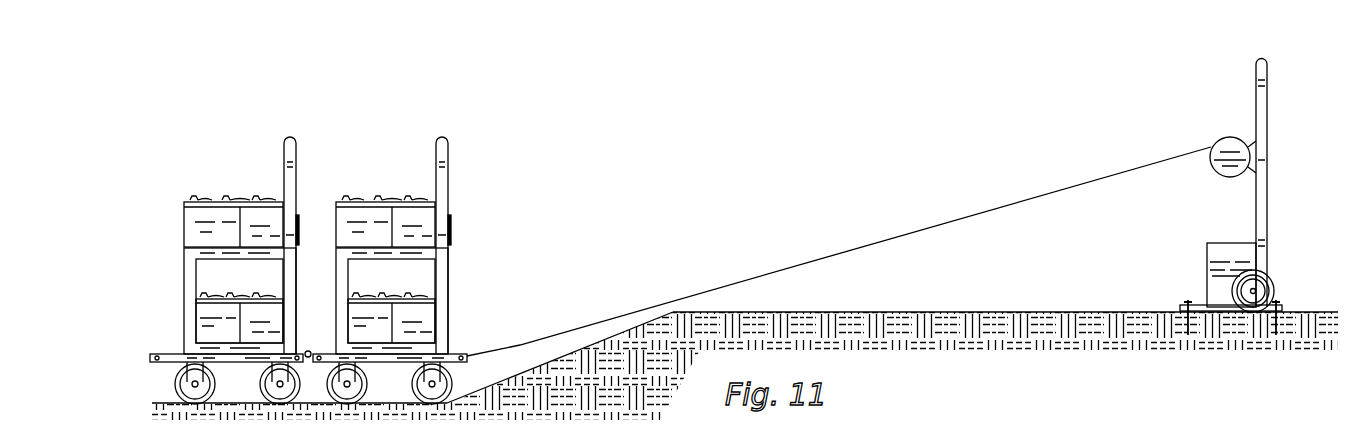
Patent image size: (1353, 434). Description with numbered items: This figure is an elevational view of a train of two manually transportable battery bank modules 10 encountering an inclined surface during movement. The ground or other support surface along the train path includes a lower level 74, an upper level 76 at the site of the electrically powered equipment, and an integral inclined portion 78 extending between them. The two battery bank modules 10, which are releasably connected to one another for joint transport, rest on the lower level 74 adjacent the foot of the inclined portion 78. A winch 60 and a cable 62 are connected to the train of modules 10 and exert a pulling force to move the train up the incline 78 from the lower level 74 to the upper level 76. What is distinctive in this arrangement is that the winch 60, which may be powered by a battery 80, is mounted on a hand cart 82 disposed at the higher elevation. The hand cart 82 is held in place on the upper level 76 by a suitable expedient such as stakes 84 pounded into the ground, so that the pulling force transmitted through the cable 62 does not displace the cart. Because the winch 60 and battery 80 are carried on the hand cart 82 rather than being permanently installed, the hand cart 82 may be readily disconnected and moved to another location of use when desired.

The battery bank module 10 is at (300, 162).
The winch 60 is at (1227, 150).
The cable 62 is at (812, 262).
The lower level 74 is at (167, 403).
The upper level 76 is at (989, 311).
The inclined portion 78 is at (547, 364).
The battery 80 is at (1218, 262).
The hand cart 82 is at (1268, 183).
The stakes 84 is at (1186, 303).